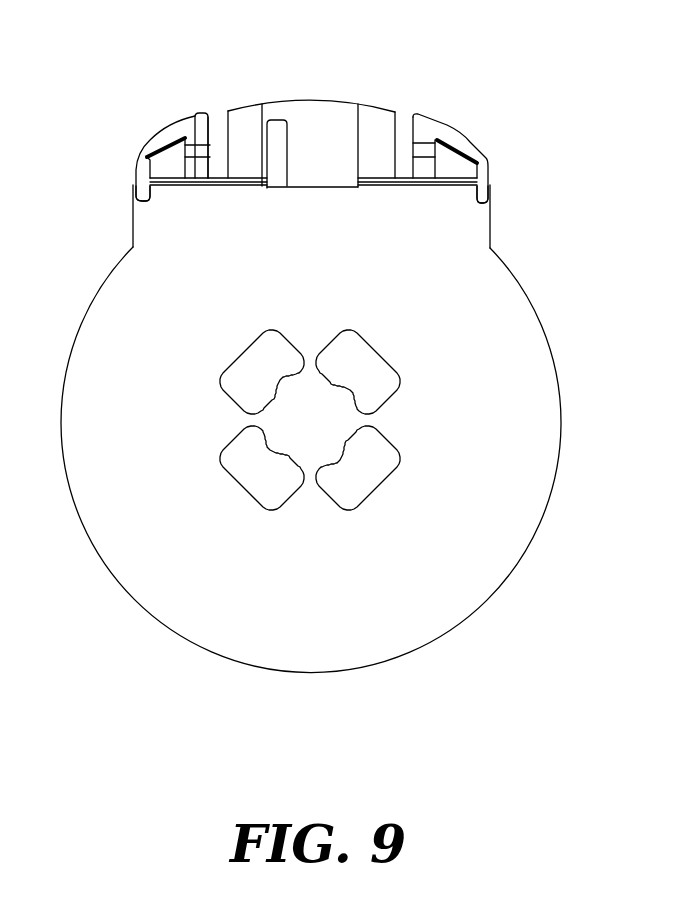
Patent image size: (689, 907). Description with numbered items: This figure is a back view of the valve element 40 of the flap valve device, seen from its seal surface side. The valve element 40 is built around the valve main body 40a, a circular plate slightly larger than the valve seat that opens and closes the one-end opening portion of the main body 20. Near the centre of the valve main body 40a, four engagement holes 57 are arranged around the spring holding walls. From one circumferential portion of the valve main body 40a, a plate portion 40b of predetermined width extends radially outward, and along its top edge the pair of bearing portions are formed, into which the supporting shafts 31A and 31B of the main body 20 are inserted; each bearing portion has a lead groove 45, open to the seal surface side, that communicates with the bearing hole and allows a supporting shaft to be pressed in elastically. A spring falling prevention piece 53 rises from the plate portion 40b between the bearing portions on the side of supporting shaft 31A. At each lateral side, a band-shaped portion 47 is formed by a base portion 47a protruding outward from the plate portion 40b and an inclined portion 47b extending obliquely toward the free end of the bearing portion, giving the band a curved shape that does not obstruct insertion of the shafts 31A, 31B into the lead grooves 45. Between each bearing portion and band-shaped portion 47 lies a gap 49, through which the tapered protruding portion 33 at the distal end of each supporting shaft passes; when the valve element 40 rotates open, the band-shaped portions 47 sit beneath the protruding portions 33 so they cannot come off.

The main body 20 is at (268, 97).
The supporting shaft 31A is at (409, 141).
The supporting shaft 31B is at (227, 145).
The protruding portion 33 is at (167, 150).
The valve element 40 is at (171, 642).
The valve main body 40a is at (431, 638).
The plate portion 40b is at (147, 221).
The lead groove 45 is at (197, 145).
The band-shaped portion 47 is at (303, 157).
The base portion 47a is at (140, 172).
The inclined portion 47b is at (147, 143).
The gap 49 is at (128, 199).
The spring falling prevention piece 53 is at (286, 140).
The engagement hole 57 is at (378, 368).